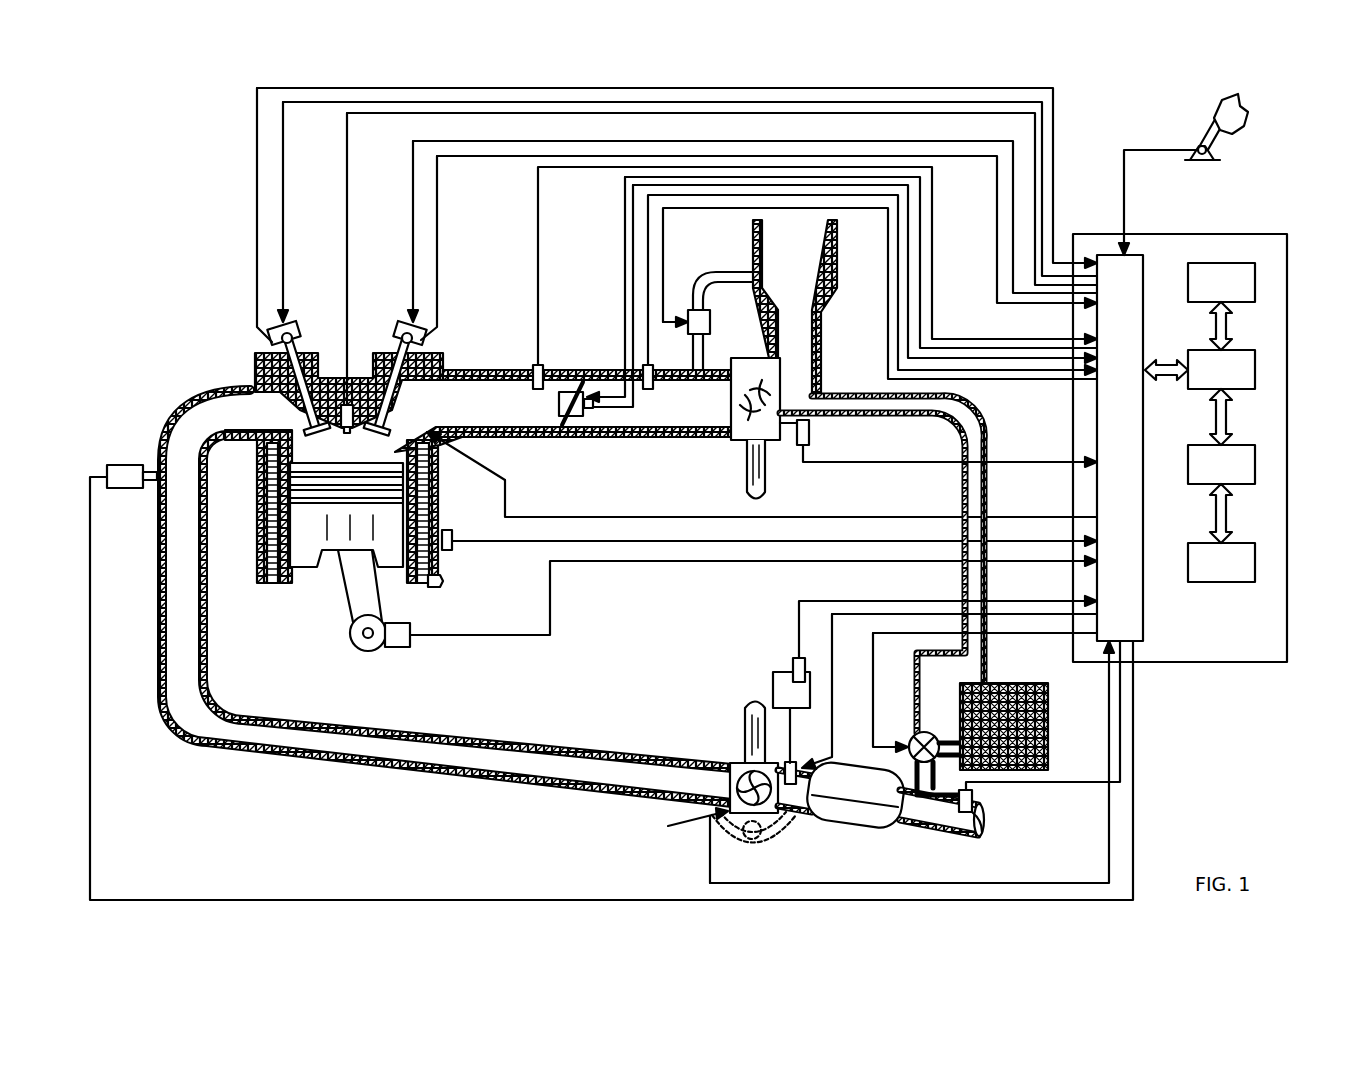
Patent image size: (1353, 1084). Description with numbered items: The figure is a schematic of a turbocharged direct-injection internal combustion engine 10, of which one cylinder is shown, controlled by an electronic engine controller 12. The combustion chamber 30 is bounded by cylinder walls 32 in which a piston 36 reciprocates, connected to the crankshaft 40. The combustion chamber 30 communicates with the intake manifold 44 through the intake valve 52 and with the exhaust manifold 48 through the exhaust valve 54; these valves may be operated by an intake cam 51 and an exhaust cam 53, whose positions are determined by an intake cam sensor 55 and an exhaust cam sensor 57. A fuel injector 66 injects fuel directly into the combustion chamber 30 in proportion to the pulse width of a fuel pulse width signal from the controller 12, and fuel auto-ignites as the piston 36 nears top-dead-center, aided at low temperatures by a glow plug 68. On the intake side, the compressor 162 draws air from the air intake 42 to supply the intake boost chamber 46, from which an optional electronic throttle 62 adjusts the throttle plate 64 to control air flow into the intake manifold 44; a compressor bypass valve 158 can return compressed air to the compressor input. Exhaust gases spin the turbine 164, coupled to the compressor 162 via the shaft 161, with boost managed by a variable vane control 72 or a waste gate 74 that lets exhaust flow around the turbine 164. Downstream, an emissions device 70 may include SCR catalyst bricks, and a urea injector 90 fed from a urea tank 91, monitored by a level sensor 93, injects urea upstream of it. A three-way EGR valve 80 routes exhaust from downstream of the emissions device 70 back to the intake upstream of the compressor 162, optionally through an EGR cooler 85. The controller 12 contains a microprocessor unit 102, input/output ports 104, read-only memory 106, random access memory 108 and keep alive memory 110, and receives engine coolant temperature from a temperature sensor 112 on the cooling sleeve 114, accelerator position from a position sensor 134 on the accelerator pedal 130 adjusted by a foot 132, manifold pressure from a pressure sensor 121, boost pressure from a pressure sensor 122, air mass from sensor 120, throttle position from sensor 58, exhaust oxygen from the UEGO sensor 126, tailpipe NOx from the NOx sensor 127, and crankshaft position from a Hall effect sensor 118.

The internal combustion engine 10 is at (190, 305).
The electronic engine controller 12 is at (1200, 433).
The combustion chamber 30 is at (272, 532).
The cylinder walls 32 is at (296, 578).
The piston 36 is at (333, 540).
The crankshaft 40 is at (358, 648).
The air intake 42 is at (795, 306).
The intake manifold 44 is at (585, 403).
The intake boost chamber 46 is at (660, 405).
The exhaust manifold 48 is at (447, 596).
The intake cam 51 is at (404, 326).
The intake valve 52 is at (395, 423).
The exhaust cam 53 is at (300, 326).
The exhaust valve 54 is at (293, 404).
The intake cam sensor 55 is at (416, 342).
The exhaust cam sensor 57 is at (279, 338).
The throttle position sensor 58 is at (592, 410).
The electronic throttle 62 is at (566, 390).
The throttle plate 64 is at (577, 380).
The fuel injector 66 is at (343, 402).
The glow plug 68 is at (762, 474).
The emissions device 70 is at (835, 824).
The variable vane control 72 is at (875, 762).
The waste gate 74 is at (760, 838).
The EGR valve 80 is at (911, 741).
The EGR cooler 85 is at (1048, 724).
The urea injector 90 is at (794, 762).
The urea tank 91 is at (791, 717).
The level sensor 93 is at (793, 664).
The microprocessor unit 102 is at (1258, 370).
The input/output ports 104 is at (1145, 262).
The read-only memory 106 is at (1258, 285).
The random access memory 108 is at (1258, 465).
The keep alive memory 110 is at (1258, 562).
The temperature sensor 112 is at (447, 531).
The cooling sleeve 114 is at (443, 580).
The Hall effect sensor 118 is at (395, 648).
The air mass sensor 120 is at (809, 440).
The pressure sensor 121 is at (532, 368).
The pressure sensor 122 is at (666, 360).
The UEGO sensor 126 is at (107, 470).
The NOx sensor 127 is at (973, 800).
The accelerator pedal 130 is at (1192, 128).
The foot 132 is at (1242, 114).
The position sensor 134 is at (1215, 158).
The compressor bypass valve 158 is at (692, 310).
The shaft 161 is at (747, 485).
The compressor 162 is at (731, 438).
The turbine 164 is at (733, 762).